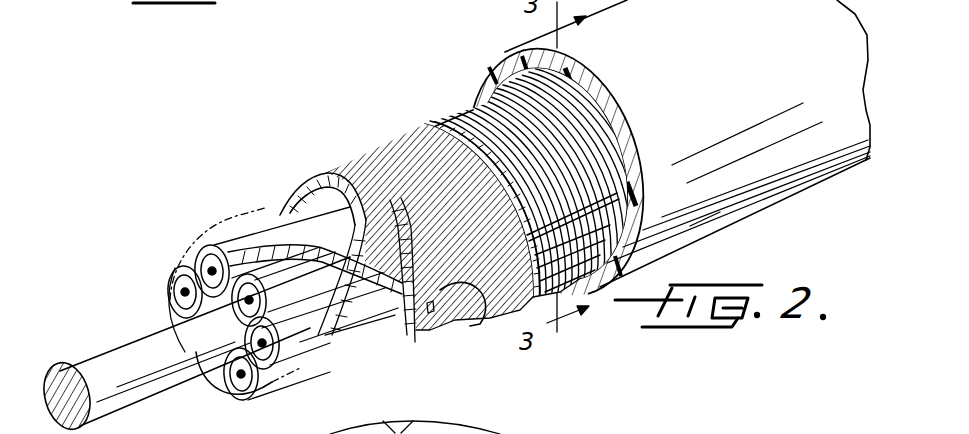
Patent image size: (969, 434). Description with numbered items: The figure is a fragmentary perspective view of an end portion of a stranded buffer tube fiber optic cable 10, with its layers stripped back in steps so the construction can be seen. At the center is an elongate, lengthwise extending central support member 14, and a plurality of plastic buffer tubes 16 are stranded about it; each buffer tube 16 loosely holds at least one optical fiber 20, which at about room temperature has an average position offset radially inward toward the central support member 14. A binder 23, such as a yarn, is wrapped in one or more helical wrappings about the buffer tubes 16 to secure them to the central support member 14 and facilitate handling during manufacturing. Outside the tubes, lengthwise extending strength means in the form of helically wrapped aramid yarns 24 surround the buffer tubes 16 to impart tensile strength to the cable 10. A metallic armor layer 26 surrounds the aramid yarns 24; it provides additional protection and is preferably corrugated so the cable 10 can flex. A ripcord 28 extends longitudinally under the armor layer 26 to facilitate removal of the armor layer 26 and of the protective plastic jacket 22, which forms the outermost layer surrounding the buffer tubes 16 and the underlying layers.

The fiber optic cable 10 is at (795, 203).
The central support member 14 is at (107, 355).
The buffer tube 16 is at (268, 230).
The optical fiber 20 is at (205, 252).
The protective plastic jacket 22 is at (697, 222).
The binder 23 is at (290, 386).
The aramid yarns 24 is at (363, 167).
The metallic armor layer 26 is at (462, 110).
The ripcord 28 is at (474, 323).